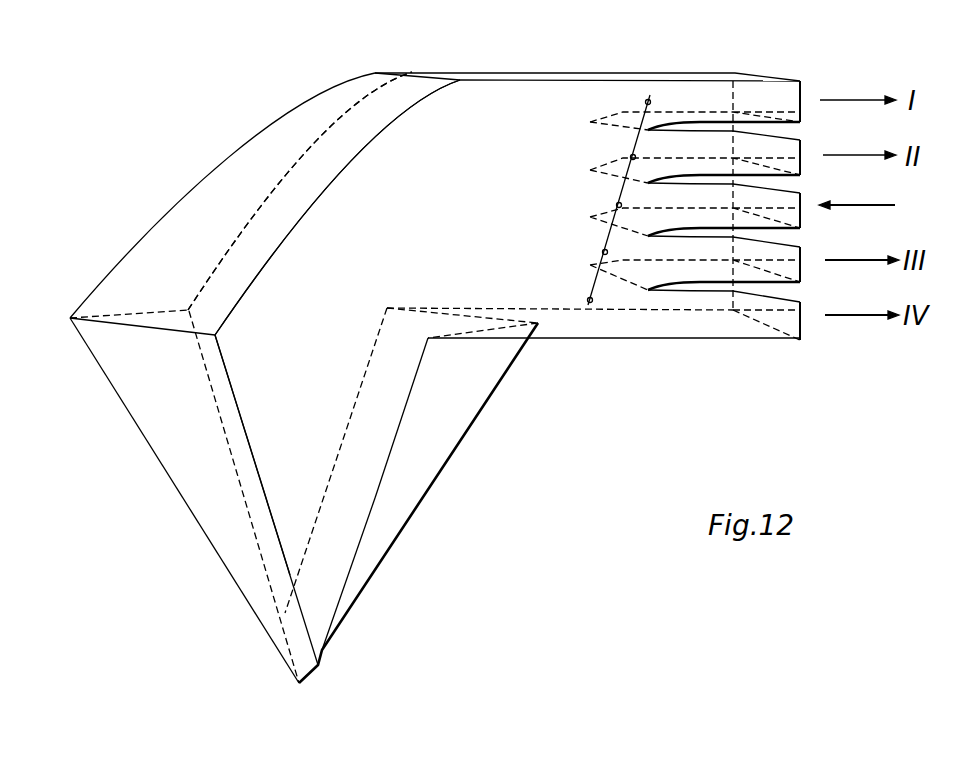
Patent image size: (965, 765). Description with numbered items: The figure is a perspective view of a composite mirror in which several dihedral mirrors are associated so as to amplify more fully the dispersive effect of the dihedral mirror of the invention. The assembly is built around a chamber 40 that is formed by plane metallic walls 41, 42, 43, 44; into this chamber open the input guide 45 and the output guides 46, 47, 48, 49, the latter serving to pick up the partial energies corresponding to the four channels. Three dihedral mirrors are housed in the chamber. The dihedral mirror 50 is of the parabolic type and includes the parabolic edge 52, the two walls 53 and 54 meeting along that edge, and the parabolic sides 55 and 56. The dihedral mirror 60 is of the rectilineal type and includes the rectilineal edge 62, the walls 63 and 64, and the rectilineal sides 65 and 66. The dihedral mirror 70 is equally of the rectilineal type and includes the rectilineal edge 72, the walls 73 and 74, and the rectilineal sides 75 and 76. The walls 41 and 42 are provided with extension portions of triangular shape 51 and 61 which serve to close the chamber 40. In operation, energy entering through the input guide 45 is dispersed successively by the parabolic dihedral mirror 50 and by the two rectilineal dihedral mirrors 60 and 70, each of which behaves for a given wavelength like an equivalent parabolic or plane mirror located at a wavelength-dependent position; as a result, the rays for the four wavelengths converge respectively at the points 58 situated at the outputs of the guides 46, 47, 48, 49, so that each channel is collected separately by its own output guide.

The chamber 40 is at (478, 199).
The plane metallic wall 41 is at (596, 336).
The plane metallic wall 42 is at (262, 238).
The plane metallic wall 43 is at (600, 78).
The plane metallic wall 44 is at (657, 333).
The input guide 45 is at (801, 208).
The output guide 46 is at (804, 96).
The output guide 47 is at (803, 153).
The output guide 48 is at (795, 268).
The output guide 49 is at (795, 330).
The dihedral mirror 50 is at (188, 262).
The triangular shaped extension portion 51 is at (236, 426).
The parabolic edge 52 is at (222, 172).
The wall 53 is at (292, 168).
The wall 54 is at (327, 176).
The parabolic side 55 is at (262, 214).
The parabolic side 56 is at (291, 230).
The convergence point 58 is at (588, 300).
The dihedral mirror 60 is at (192, 446).
The triangular shaped extension portion 61 is at (318, 394).
The rectilineal edge 62 is at (168, 486).
The wall 63 is at (240, 487).
The wall 64 is at (266, 520).
The rectilineal side 65 is at (220, 398).
The rectilineal side 66 is at (250, 460).
The dihedral mirror 70 is at (430, 440).
The rectilineal edge 72 is at (455, 448).
The wall 73 is at (368, 379).
The wall 74 is at (418, 390).
The rectilineal side 75 is at (350, 414).
The rectilineal side 76 is at (394, 450).